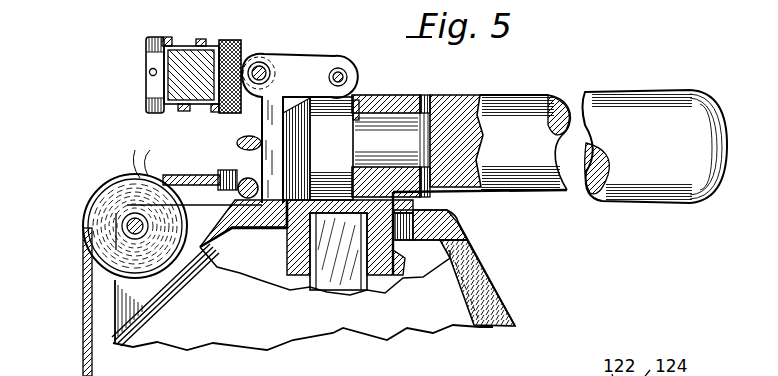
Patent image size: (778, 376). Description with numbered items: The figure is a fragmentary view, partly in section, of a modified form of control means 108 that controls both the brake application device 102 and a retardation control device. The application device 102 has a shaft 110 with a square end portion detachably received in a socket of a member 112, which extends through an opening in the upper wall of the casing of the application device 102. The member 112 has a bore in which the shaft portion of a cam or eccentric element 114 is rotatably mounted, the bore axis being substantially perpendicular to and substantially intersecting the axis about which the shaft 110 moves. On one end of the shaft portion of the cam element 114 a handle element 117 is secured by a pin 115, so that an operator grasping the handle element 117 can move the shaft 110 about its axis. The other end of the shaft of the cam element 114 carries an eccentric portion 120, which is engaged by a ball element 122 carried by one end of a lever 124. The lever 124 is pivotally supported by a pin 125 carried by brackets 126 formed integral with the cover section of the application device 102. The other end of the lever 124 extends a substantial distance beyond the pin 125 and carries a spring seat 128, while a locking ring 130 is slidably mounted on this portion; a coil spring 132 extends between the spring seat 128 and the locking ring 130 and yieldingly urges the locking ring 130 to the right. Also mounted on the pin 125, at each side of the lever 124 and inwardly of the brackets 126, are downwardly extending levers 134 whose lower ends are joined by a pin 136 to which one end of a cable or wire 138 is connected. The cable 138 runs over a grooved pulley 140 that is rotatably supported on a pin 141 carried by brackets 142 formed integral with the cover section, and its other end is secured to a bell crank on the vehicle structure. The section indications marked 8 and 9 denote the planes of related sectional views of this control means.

The application device 102 is at (508, 294).
The control means 108 is at (366, 94).
The shaft 110 is at (355, 287).
The member 112 is at (417, 201).
The cam or eccentric element 114 is at (440, 130).
The pin 115 is at (423, 100).
The handle element 117 is at (510, 110).
The eccentric portion 120 is at (320, 110).
The ball element 122 is at (348, 72).
The lever 124 is at (312, 54).
The pin 125 is at (258, 62).
The brackets 126 is at (258, 147).
The spring seat 128 is at (147, 62).
The locking ring 130 is at (221, 42).
The coil spring 132 is at (167, 38).
The downwardly extending levers 134 is at (243, 124).
The pin 136 is at (252, 232).
The cable or wire 138 is at (178, 176).
The grooved pulley 140 is at (100, 208).
The pin 141 is at (134, 225).
The brackets 142 is at (123, 284).
The section line 8- 8 is at (353, 205).
The section line 9- 9 is at (215, 225).